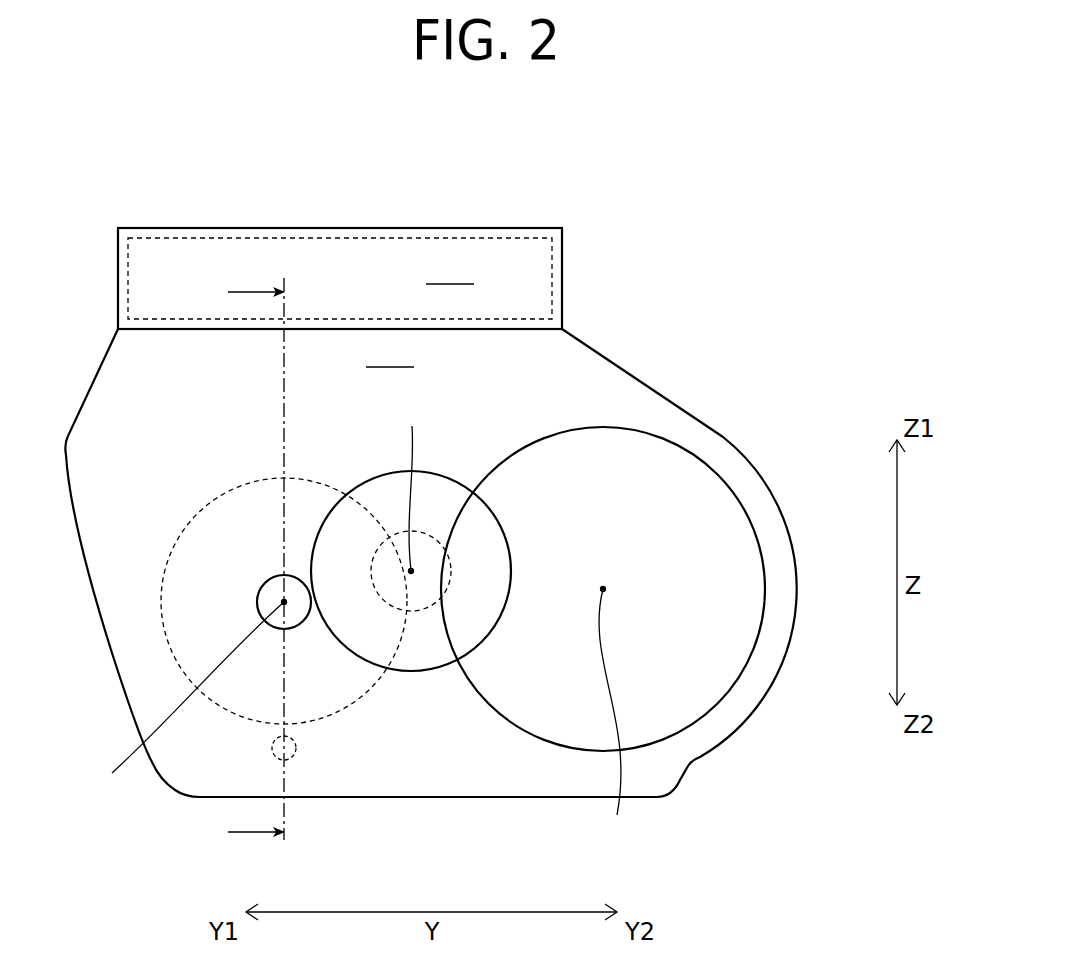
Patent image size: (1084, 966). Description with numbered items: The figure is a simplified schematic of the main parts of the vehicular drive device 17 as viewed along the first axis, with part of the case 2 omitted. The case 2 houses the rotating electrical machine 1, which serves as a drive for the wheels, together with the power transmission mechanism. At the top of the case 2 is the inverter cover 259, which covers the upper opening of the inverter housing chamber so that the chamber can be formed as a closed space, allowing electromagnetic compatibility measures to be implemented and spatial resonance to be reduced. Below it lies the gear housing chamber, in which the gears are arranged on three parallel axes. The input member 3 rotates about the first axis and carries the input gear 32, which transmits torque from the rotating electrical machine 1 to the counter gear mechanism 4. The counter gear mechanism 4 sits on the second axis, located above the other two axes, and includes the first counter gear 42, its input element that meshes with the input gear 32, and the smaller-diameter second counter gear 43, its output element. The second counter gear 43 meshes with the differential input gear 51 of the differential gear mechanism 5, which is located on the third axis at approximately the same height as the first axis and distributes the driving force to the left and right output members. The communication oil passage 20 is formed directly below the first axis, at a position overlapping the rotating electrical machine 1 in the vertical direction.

The vehicular drive device 17 is at (430, 480).
The case 2 is at (737, 422).
The inverter cover 259 is at (221, 228).
The differential gear mechanism 5 is at (603, 547).
The differential input gear 51 is at (567, 427).
The counter gear mechanism 4 is at (410, 526).
The first counter gear 42 is at (372, 477).
The second counter gear 43 is at (433, 542).
The input member 3 is at (254, 559).
The input gear 32 is at (267, 577).
The rotating electrical machine 1 is at (183, 531).
The communication oil passage 20 is at (297, 748).